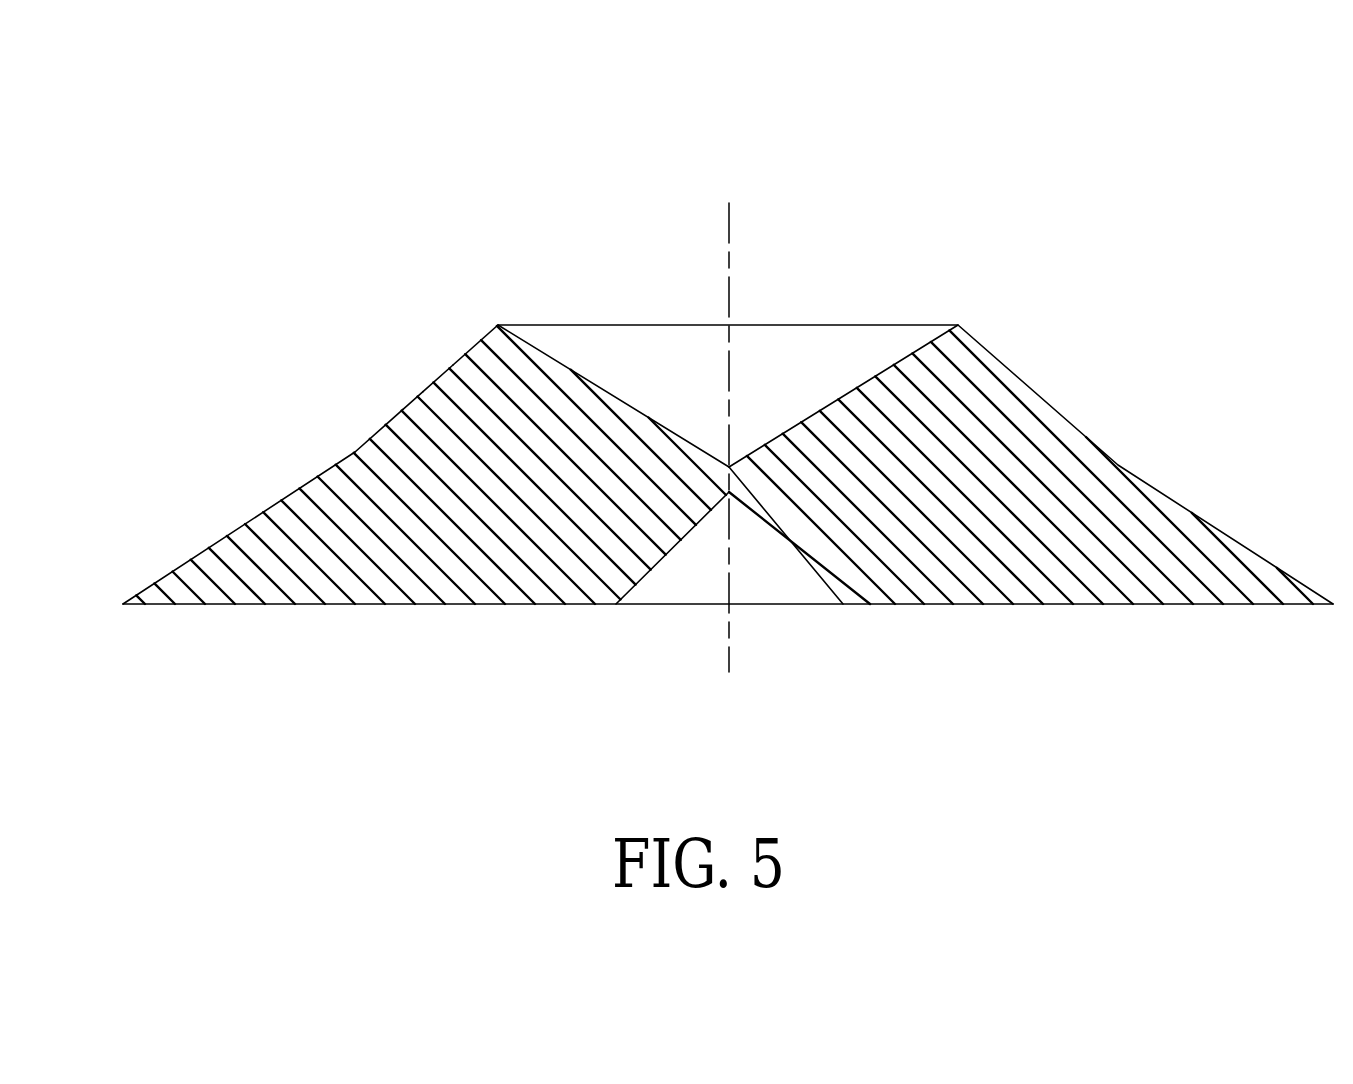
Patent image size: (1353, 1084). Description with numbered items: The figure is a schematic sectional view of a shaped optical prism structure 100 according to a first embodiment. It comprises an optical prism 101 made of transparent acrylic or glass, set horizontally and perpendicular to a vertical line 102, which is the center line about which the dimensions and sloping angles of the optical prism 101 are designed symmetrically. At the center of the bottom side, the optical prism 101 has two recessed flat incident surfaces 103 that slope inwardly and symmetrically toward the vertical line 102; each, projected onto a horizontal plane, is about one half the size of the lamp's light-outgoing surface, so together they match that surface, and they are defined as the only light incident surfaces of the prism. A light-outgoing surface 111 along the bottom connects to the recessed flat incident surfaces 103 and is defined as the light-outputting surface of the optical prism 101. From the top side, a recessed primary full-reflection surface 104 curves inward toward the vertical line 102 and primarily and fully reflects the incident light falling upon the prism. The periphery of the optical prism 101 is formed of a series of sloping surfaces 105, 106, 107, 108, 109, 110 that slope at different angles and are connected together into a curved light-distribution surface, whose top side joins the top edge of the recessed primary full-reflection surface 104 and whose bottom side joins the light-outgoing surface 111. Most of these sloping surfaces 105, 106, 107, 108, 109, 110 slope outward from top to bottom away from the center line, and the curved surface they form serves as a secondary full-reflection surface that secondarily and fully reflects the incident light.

The shaped optical prism structure 100 is at (929, 143).
The optical prism 101 is at (997, 437).
The vertical line 102 is at (726, 413).
The recessed flat incident surface 103 is at (667, 548).
The recessed primary full-reflection surface 104 is at (568, 366).
The sloping surface 105 is at (452, 370).
The sloping surface 106 is at (424, 398).
The sloping surface 107 is at (403, 410).
The sloping surface 108 is at (385, 426).
The sloping surface 109 is at (355, 452).
The sloping surface 110 is at (262, 512).
The light-outgoing surface 111 is at (388, 603).